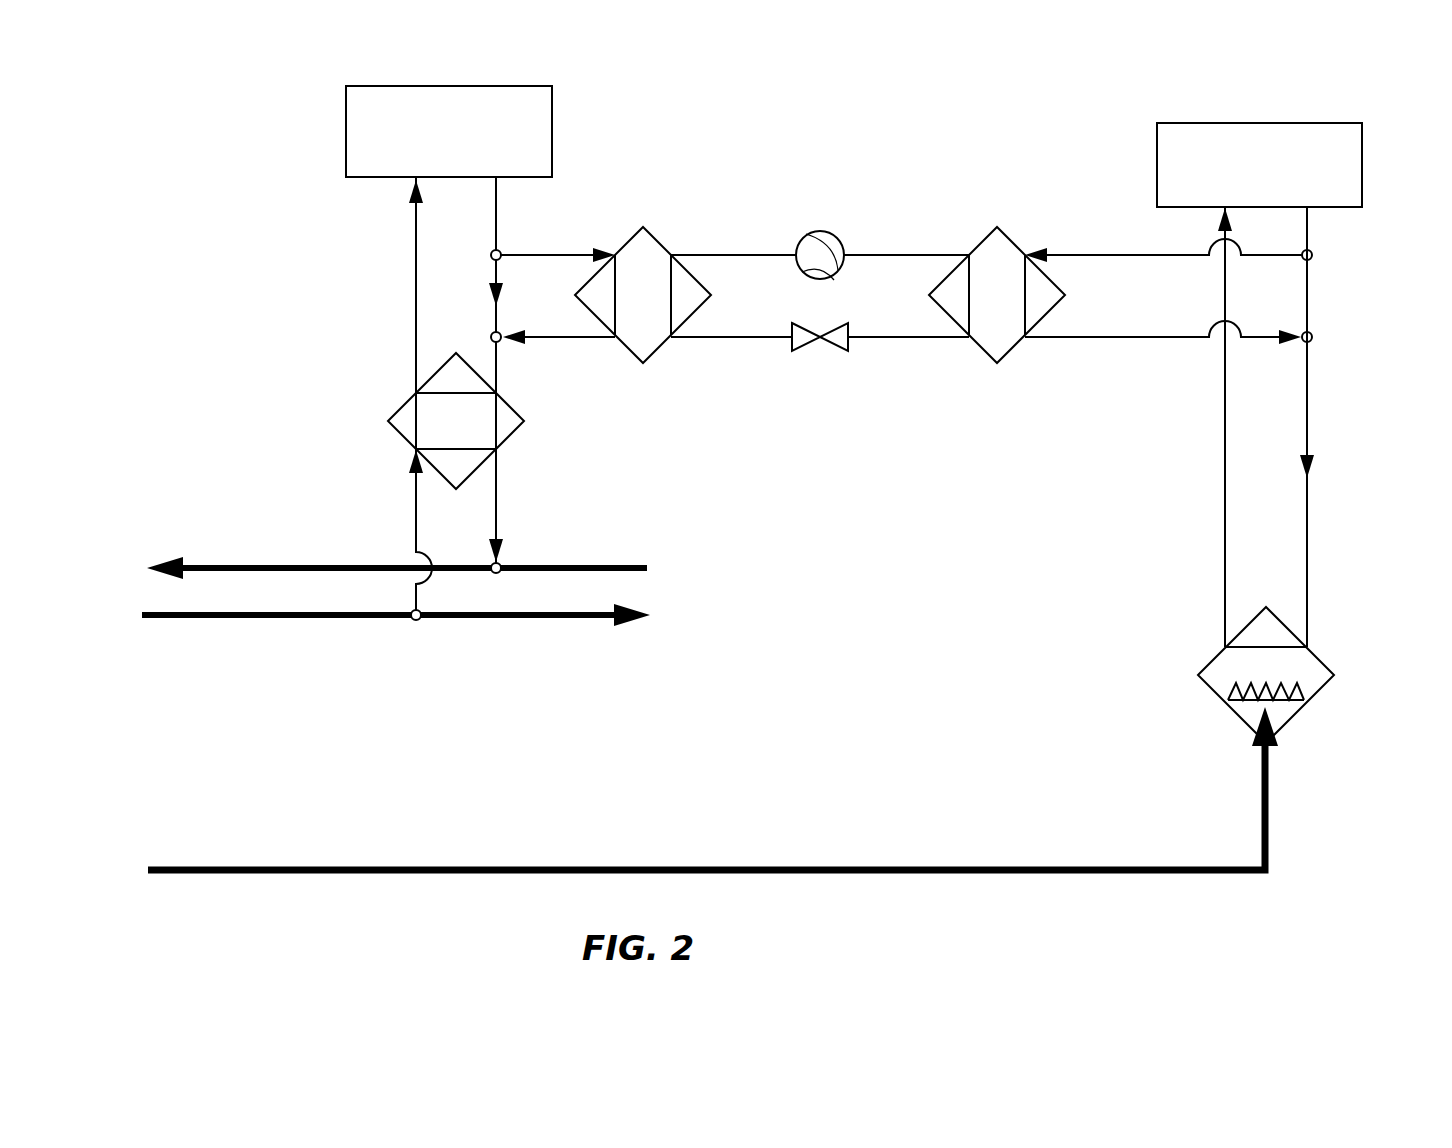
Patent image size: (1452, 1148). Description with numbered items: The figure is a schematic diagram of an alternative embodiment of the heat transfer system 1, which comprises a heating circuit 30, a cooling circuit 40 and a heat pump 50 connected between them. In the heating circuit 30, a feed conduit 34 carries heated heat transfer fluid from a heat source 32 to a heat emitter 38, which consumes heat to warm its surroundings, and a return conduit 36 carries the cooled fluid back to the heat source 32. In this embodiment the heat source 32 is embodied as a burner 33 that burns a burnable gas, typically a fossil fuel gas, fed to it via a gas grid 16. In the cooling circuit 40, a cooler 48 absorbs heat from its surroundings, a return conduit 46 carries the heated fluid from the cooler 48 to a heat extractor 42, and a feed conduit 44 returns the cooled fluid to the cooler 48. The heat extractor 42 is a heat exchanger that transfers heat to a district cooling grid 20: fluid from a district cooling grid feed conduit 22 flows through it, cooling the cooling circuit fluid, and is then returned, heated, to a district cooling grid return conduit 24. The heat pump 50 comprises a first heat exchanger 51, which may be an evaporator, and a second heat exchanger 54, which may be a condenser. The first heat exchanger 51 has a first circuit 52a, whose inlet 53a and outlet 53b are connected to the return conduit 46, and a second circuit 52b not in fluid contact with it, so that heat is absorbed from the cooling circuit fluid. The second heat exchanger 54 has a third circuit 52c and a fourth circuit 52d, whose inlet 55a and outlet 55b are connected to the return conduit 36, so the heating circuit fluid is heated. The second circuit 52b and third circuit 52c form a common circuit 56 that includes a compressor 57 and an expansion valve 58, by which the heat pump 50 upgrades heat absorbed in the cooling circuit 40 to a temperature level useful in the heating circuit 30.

The heat transfer system 1 is at (248, 156).
The gas grid 16 is at (812, 874).
The district cooling grid 20 is at (268, 542).
The district cooling grid feed conduit 22 is at (322, 620).
The district cooling grid return conduit 24 is at (357, 566).
The heating circuit 30 is at (1362, 245).
The heat source 32 is at (1208, 673).
The burner 33 is at (1303, 665).
The feed conduit 34 is at (1222, 547).
The return conduit 36 is at (1310, 412).
The heat emitter 38 is at (1320, 135).
The cooling circuit 40 is at (345, 205).
The heat extractor 42 is at (410, 413).
The feed conduit 44 is at (412, 300).
The return conduit 46 is at (494, 222).
The cooler 48 is at (360, 117).
The heat pump 50 is at (771, 178).
The first heat exchanger 51 is at (651, 260).
The first circuit 52a is at (578, 253).
The second circuit 52b is at (735, 342).
The third circuit 52c is at (917, 342).
The fourth circuit 52d is at (1062, 253).
The inlet 53a is at (565, 252).
The outlet 53b is at (580, 342).
The second heat exchanger 54 is at (1010, 250).
The inlet 55a is at (1120, 253).
The outlet 55b is at (1115, 342).
The common circuit 56 is at (900, 253).
The compressor 57 is at (832, 238).
The expansion valve 58 is at (838, 352).